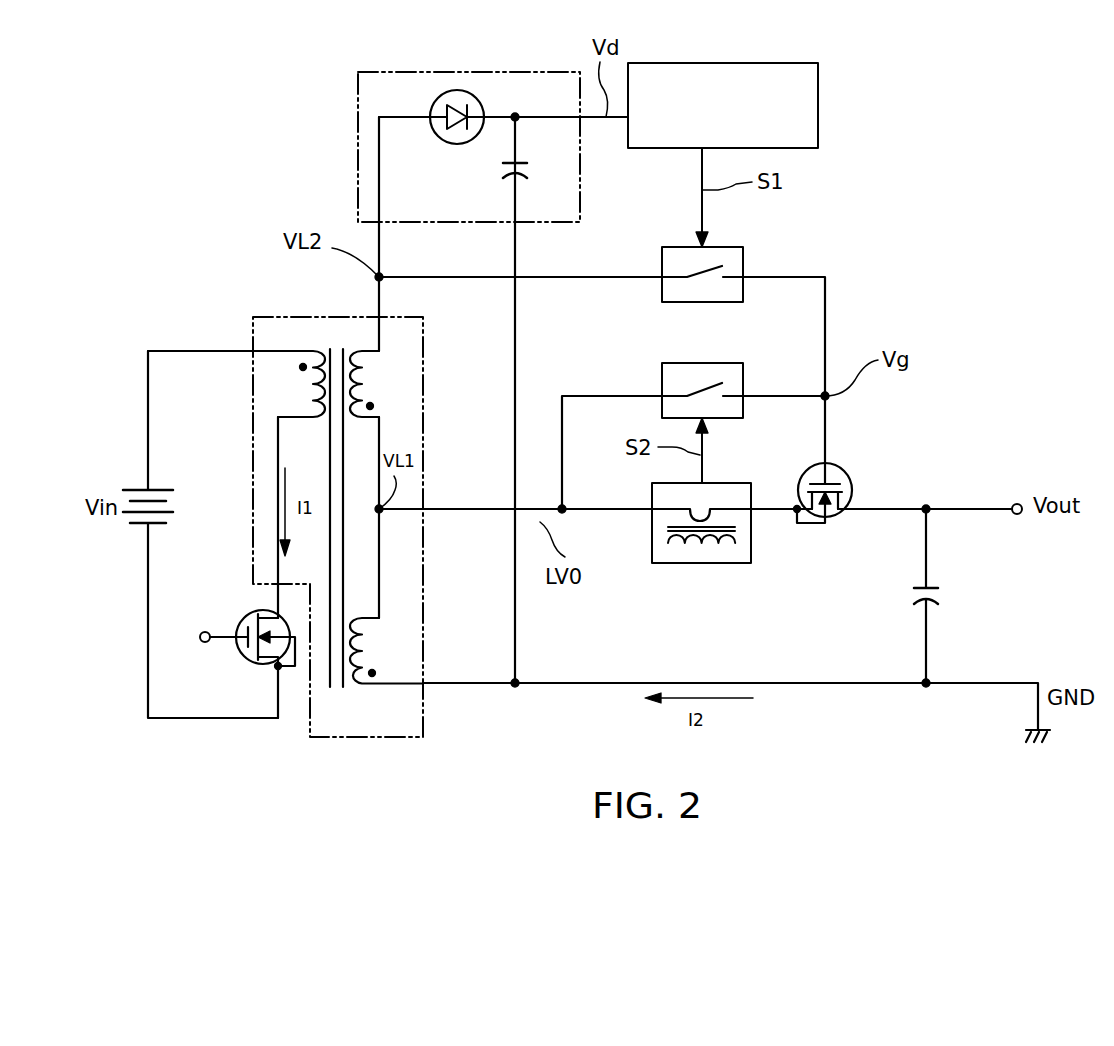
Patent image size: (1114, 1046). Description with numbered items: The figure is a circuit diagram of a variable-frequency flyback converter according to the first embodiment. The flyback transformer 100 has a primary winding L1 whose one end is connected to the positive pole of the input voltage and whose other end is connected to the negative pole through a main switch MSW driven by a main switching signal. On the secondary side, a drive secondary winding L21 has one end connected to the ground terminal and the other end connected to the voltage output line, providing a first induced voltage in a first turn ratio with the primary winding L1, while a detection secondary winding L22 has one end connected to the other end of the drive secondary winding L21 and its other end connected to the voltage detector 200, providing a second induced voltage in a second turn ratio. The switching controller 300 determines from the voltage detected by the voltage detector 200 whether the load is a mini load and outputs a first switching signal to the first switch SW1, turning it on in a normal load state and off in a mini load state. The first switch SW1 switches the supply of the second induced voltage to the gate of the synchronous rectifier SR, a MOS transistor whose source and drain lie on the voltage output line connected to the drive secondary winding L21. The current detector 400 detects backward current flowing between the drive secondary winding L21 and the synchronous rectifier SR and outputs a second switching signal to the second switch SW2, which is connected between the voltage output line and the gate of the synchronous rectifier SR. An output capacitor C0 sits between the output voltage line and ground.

The flyback transformer 100 is at (285, 483).
The voltage detector 200 is at (358, 107).
The switching controller 300 is at (818, 113).
The current detector 400 is at (702, 563).
The primary winding L1 is at (236, 384).
The drive secondary winding L21 is at (386, 651).
The detection secondary winding L22 is at (378, 384).
The main switch MSW is at (226, 664).
The first switch SW1 is at (743, 262).
The second switch SW2 is at (662, 372).
The synchronous rectifier SR is at (841, 492).
The output capacitor C0 is at (946, 596).